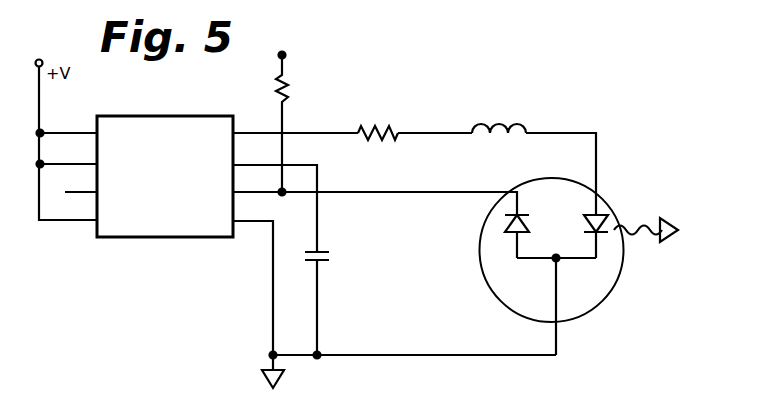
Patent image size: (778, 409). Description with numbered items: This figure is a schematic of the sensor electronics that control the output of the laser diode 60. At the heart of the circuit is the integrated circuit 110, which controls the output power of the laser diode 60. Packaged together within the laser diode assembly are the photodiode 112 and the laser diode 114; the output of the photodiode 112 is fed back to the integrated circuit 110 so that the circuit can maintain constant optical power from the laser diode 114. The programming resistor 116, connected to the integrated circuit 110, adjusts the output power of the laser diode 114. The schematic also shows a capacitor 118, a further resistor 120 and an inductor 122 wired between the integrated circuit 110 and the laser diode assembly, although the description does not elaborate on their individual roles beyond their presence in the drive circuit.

The laser diode 60 is at (607, 212).
The integrated circuit 110 is at (165, 181).
The photodiode 112 is at (527, 258).
The laser diode 114 is at (587, 258).
The programming resistor 116 is at (306, 119).
The capacitor C1 118 is at (341, 264).
The resistor R5 120 is at (377, 112).
The inductor L1 122 is at (499, 105).